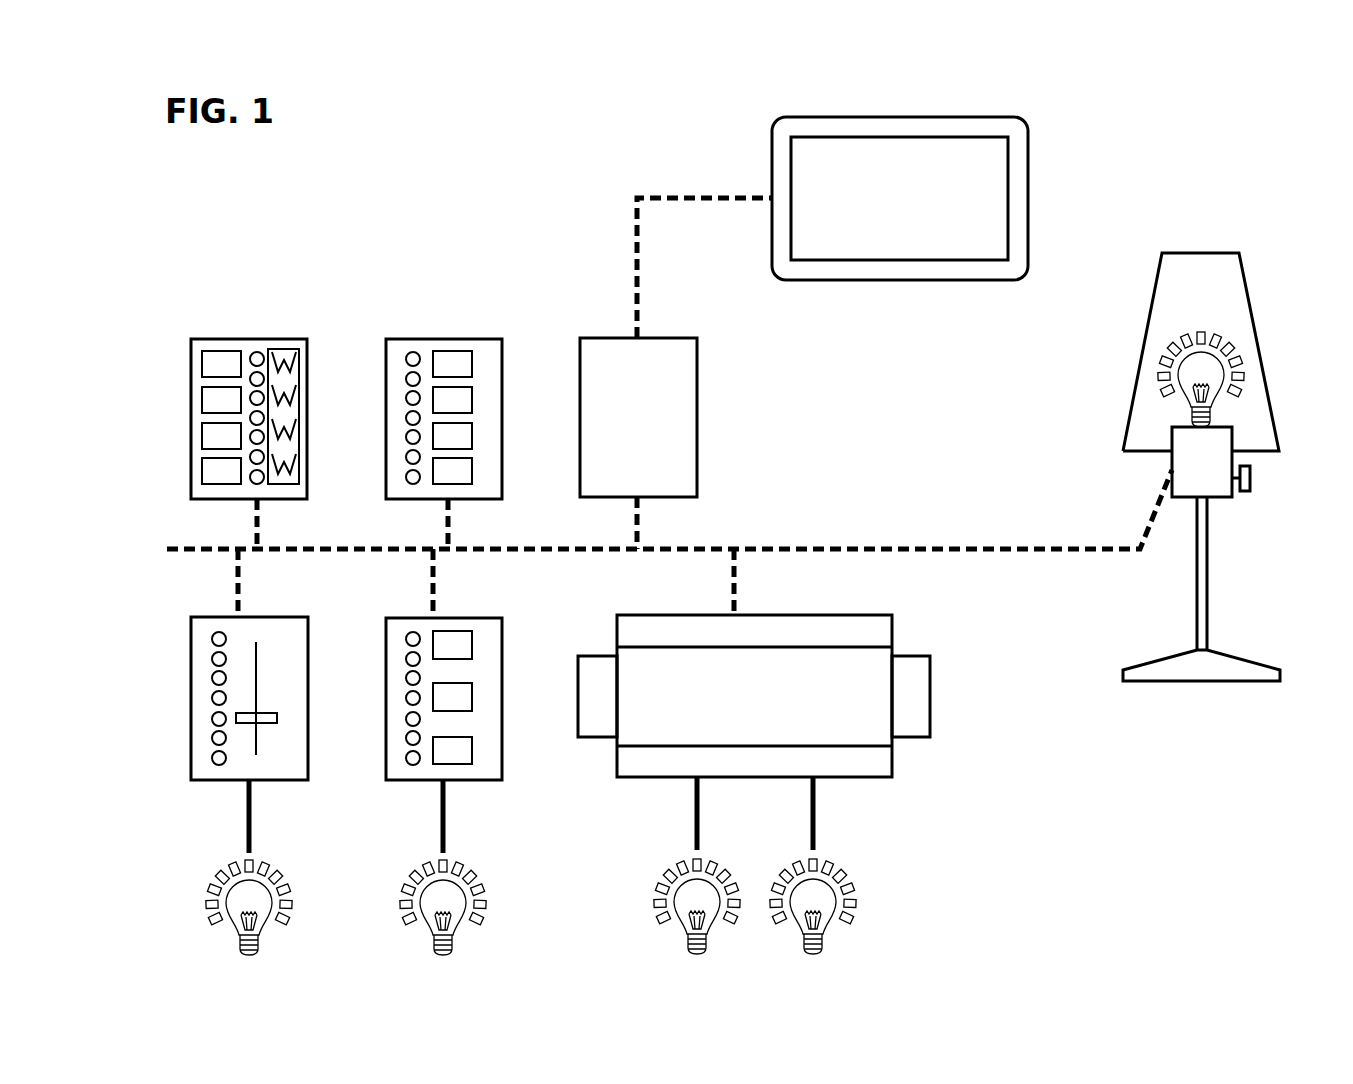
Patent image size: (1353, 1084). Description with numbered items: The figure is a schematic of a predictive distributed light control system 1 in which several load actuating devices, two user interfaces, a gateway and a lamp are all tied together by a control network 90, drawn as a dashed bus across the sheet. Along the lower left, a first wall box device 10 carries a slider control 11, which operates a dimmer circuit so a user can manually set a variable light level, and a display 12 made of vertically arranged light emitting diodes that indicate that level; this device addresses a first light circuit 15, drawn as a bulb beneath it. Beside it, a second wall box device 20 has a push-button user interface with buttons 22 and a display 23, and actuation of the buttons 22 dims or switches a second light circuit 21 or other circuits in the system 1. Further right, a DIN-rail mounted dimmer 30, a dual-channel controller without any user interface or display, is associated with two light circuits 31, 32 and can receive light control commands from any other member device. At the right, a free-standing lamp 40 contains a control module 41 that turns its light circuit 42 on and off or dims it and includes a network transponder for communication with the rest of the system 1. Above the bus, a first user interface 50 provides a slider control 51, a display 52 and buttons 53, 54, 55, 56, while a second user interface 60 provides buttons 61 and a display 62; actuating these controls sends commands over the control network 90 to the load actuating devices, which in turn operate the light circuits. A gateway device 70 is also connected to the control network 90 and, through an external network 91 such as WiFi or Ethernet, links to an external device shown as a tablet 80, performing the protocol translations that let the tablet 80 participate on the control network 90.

The distributed light control system 1 is at (480, 93).
The first wall box device 10 is at (248, 679).
The slider control 11 is at (268, 708).
The display 12 is at (212, 702).
The first light circuit 15 is at (258, 895).
The second wall box device 20 is at (431, 699).
The second light circuit 21 is at (450, 892).
The buttons 22 is at (460, 630).
The display 23 is at (416, 765).
The DIN-rail mounted dimmer 30 is at (628, 640).
The light circuit 31 is at (683, 882).
The light circuit 32 is at (828, 888).
The free-standing lamp 40 is at (1172, 467).
The control module 41 is at (1213, 488).
The light circuit 42 is at (1187, 368).
The first user interface 50 is at (248, 394).
The slider control 51 is at (290, 382).
The display 52 is at (257, 346).
The button 53 is at (212, 369).
The button 54 is at (213, 400).
The button 55 is at (212, 436).
The button 56 is at (212, 473).
The second user interface 60 is at (421, 387).
The buttons 61 is at (450, 363).
The display 62 is at (413, 347).
The gateway device 70 is at (573, 337).
The tablet 80 is at (778, 138).
The control network 90 is at (898, 544).
The external network 91 is at (647, 188).